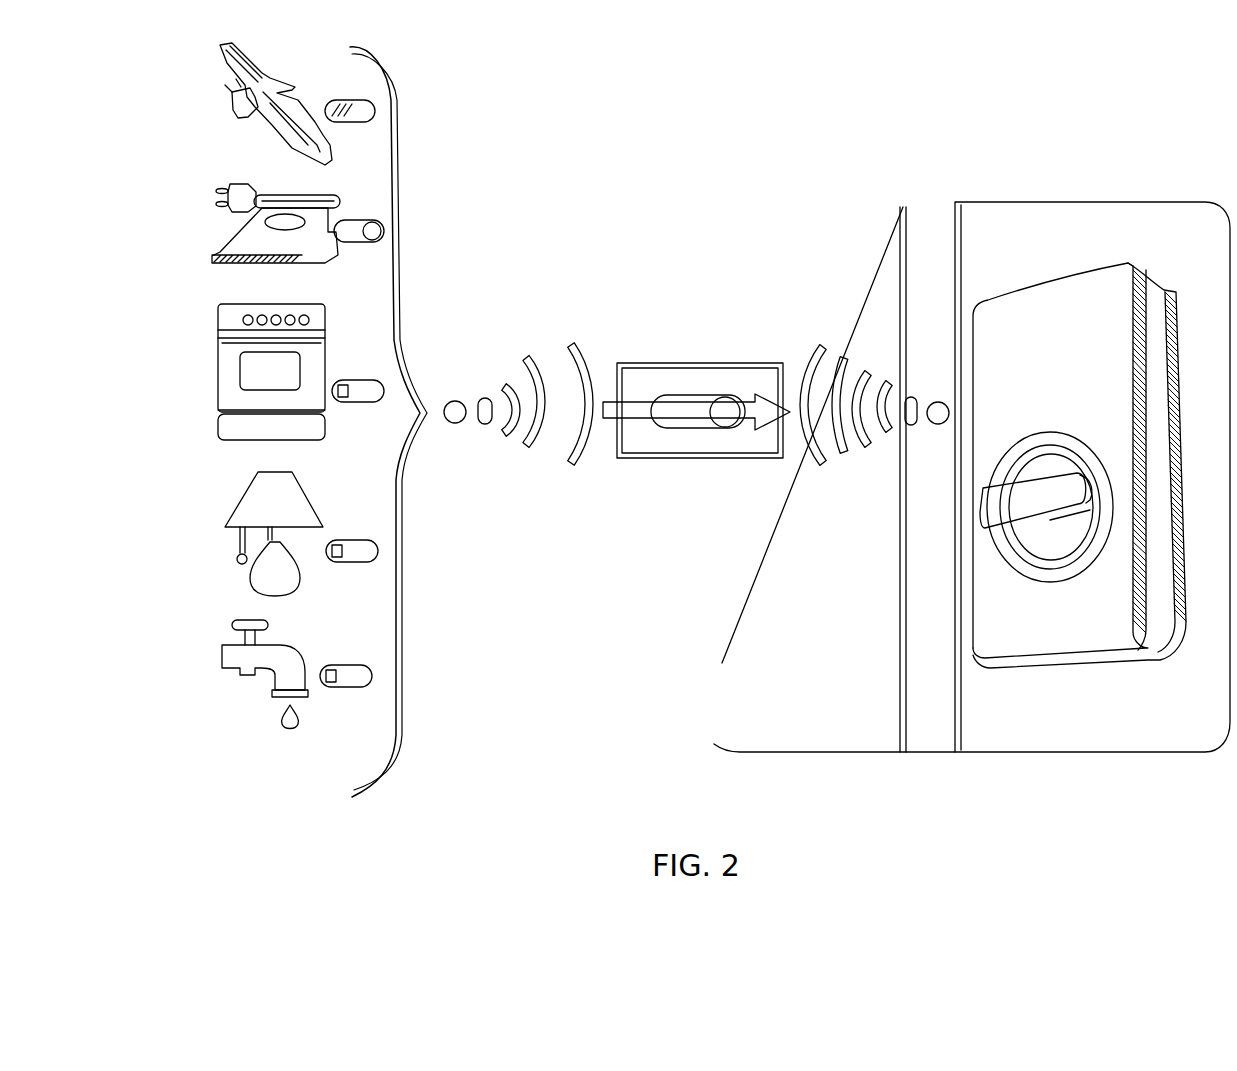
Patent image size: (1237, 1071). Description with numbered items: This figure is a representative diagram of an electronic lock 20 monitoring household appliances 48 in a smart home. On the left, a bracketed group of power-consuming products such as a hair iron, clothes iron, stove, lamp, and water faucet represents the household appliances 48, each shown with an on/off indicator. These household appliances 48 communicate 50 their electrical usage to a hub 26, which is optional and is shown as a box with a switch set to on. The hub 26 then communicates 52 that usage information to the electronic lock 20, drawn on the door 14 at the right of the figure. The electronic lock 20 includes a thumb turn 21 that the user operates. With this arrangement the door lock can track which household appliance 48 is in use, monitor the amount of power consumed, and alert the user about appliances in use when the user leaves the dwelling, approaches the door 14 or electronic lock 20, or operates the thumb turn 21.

The door 14 is at (973, 210).
The electronic lock 20 is at (1113, 282).
The thumb turn 21 is at (990, 497).
The hub 26 is at (622, 362).
The household appliances 48 is at (168, 476).
The communication of electrical usage to hub 50 is at (510, 436).
The communication from hub to electronic lock 52 is at (886, 432).